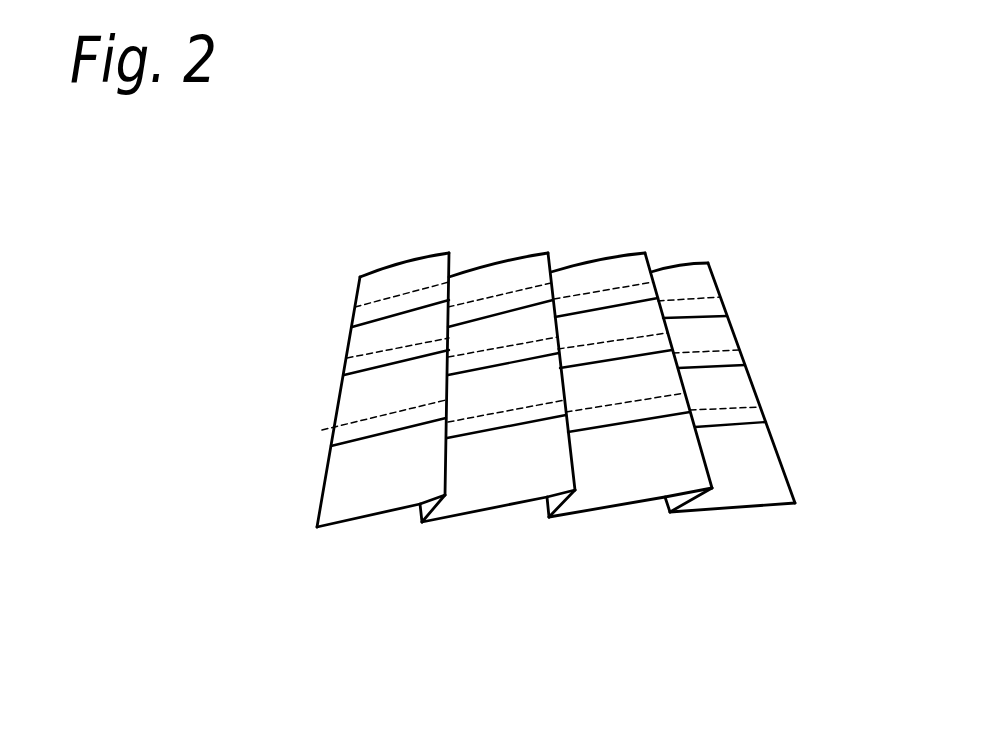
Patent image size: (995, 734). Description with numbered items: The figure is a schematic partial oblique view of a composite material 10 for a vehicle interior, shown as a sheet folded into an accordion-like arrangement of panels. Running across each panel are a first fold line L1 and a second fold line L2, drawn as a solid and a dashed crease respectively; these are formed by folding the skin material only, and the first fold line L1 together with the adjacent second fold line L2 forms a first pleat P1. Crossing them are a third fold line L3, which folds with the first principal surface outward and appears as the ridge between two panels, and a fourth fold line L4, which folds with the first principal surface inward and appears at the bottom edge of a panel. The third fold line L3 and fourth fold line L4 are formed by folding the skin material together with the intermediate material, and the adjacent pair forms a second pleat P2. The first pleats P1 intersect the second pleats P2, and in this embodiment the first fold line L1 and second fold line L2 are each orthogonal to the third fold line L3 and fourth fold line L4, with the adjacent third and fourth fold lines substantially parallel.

The composite material 10 is at (507, 377).
The first pleat P1 is at (334, 394).
The first fold line L1 is at (386, 434).
The second fold line L2 is at (370, 409).
The second pleat P2 is at (507, 455).
The third fold line L3 is at (581, 453).
The fourth fold line L4 is at (543, 507).